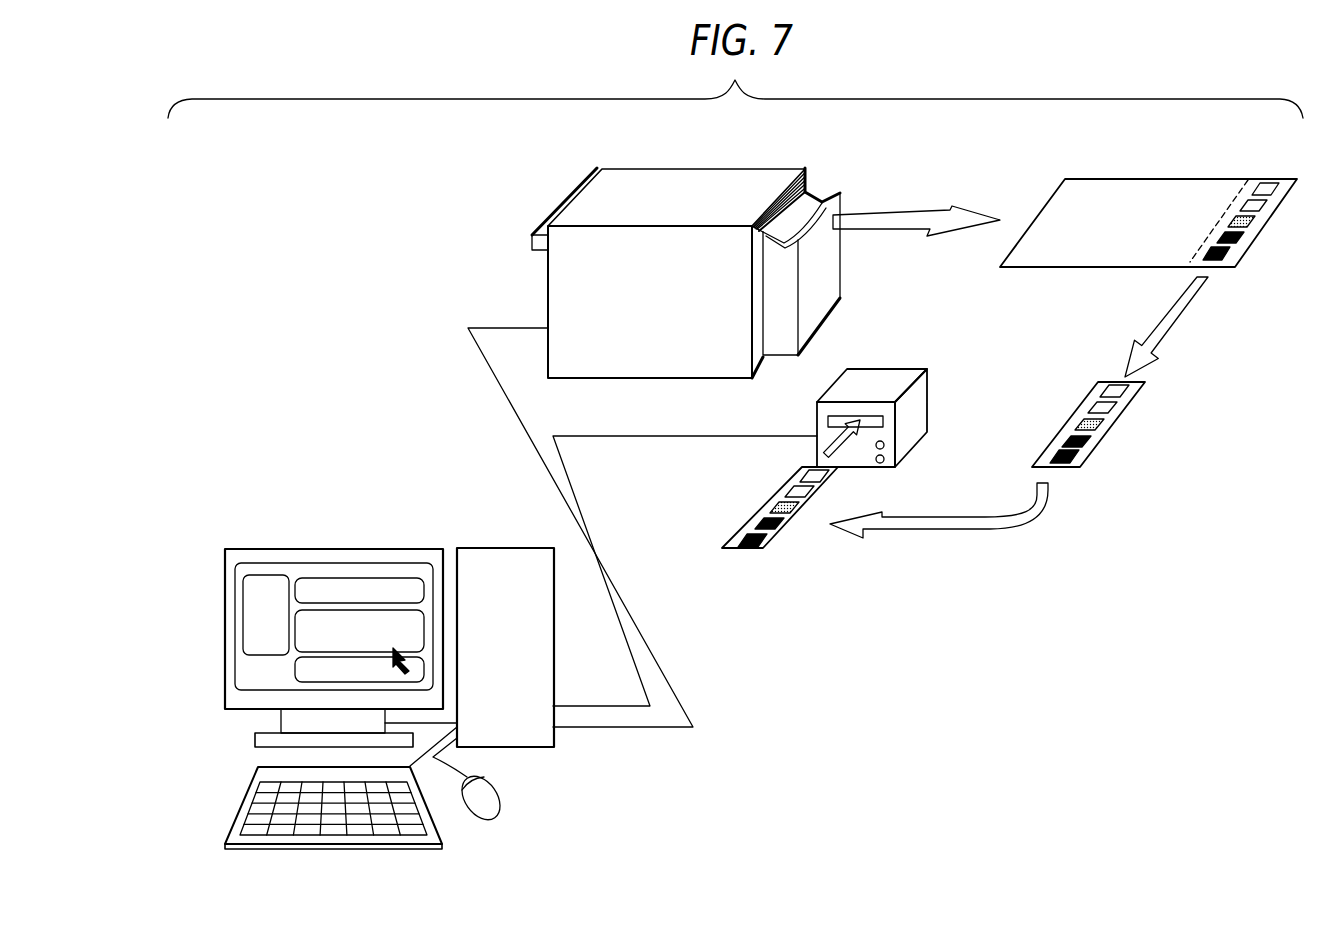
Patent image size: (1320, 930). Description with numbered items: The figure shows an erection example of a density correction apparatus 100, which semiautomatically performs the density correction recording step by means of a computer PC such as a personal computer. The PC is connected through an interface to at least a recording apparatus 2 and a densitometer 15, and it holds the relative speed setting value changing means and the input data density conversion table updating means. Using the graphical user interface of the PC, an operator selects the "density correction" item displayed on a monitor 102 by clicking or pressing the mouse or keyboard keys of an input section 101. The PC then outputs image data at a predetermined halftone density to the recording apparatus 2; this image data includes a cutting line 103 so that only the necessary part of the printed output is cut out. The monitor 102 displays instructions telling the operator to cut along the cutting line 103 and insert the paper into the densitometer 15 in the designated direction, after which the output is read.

The density correction apparatus 100 is at (488, 192).
The recording apparatus 2 is at (740, 175).
The cutting line 103 is at (1232, 198).
The densitometer 15 is at (885, 372).
The computer PC is at (437, 519).
The monitor 102 is at (278, 567).
The input section 101 is at (468, 840).